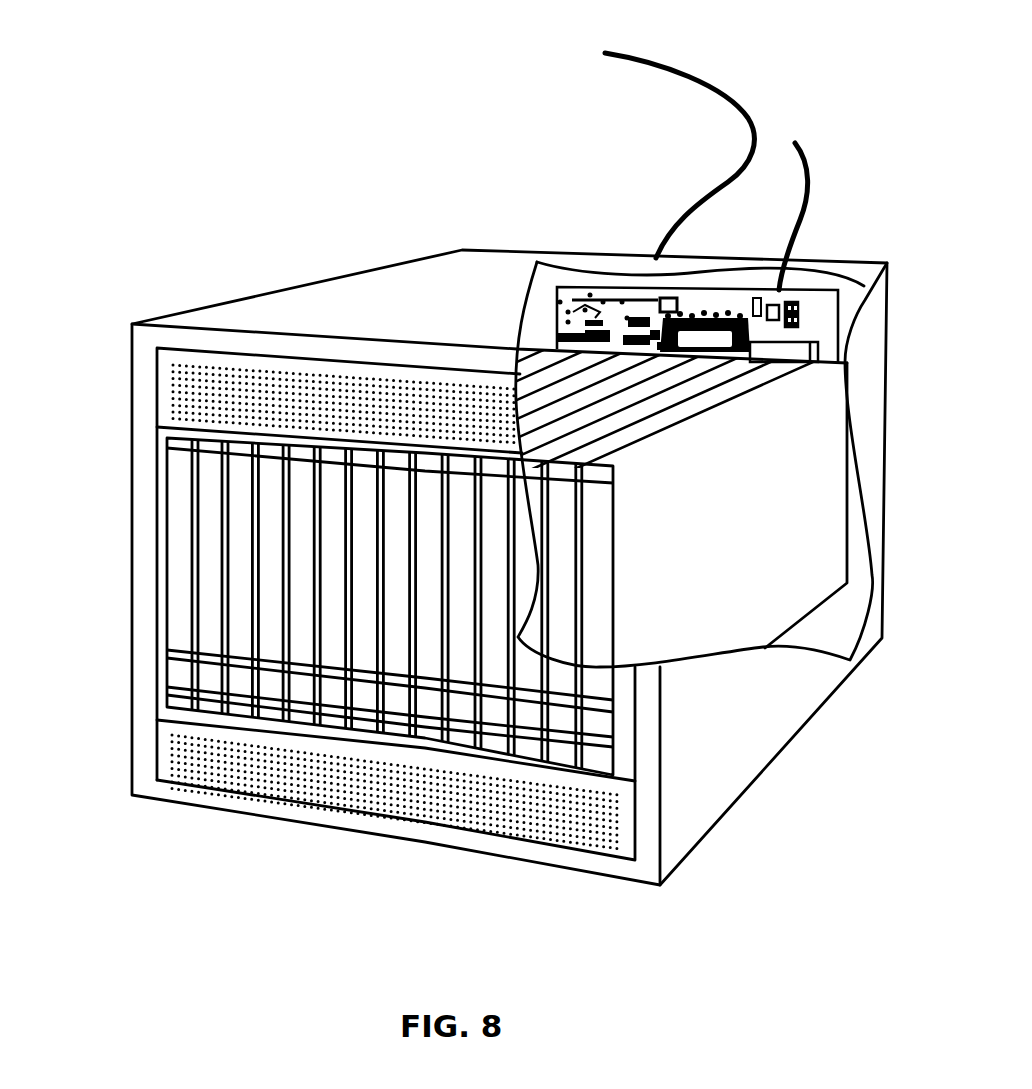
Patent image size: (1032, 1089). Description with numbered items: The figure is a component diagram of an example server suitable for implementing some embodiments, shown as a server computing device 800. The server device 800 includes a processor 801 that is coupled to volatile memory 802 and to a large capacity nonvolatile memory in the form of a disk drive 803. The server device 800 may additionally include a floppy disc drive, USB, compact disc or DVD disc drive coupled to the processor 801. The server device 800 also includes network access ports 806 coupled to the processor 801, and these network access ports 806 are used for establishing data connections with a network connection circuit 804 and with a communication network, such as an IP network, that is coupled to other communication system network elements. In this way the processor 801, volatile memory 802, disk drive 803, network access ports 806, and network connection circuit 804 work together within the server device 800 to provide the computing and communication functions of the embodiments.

The server computing device 800 is at (363, 273).
The processor 801 is at (712, 335).
The volatile memory 802 is at (812, 360).
The disk drive 803 is at (240, 521).
The network connection circuit 804 is at (753, 125).
The network access ports 806 is at (553, 340).